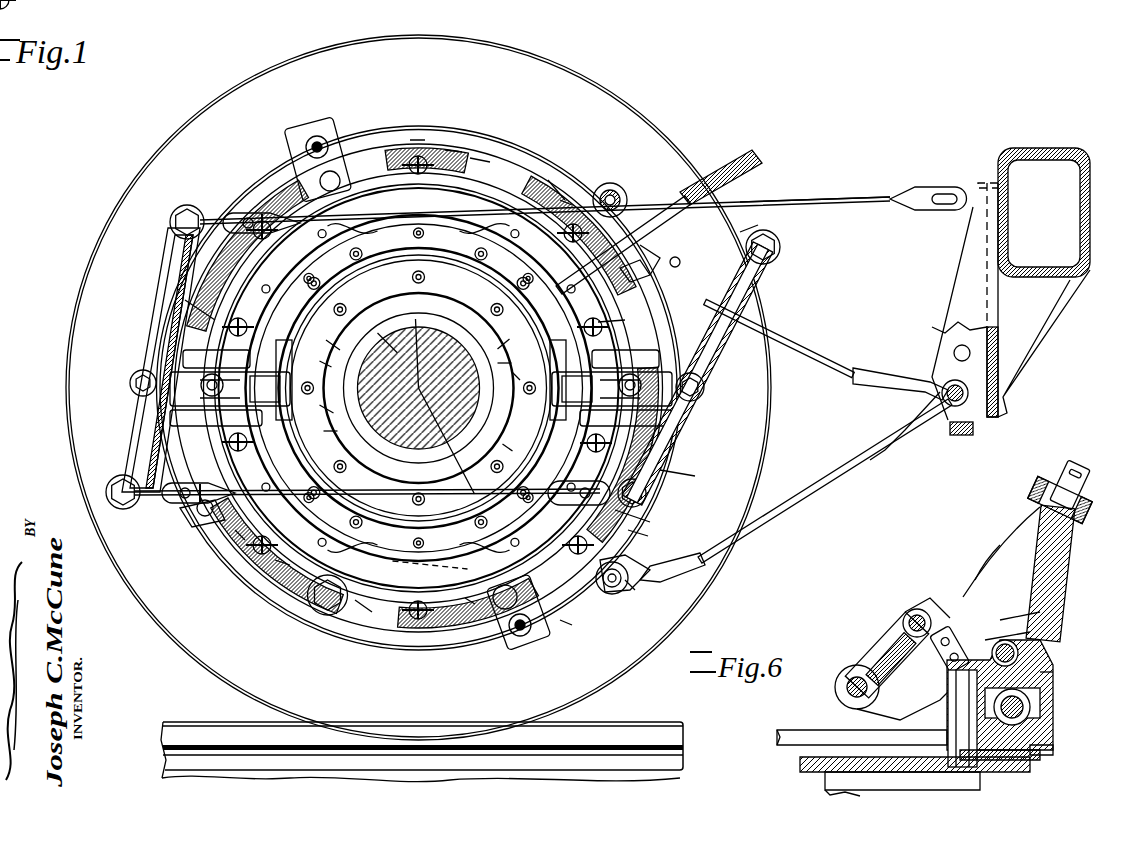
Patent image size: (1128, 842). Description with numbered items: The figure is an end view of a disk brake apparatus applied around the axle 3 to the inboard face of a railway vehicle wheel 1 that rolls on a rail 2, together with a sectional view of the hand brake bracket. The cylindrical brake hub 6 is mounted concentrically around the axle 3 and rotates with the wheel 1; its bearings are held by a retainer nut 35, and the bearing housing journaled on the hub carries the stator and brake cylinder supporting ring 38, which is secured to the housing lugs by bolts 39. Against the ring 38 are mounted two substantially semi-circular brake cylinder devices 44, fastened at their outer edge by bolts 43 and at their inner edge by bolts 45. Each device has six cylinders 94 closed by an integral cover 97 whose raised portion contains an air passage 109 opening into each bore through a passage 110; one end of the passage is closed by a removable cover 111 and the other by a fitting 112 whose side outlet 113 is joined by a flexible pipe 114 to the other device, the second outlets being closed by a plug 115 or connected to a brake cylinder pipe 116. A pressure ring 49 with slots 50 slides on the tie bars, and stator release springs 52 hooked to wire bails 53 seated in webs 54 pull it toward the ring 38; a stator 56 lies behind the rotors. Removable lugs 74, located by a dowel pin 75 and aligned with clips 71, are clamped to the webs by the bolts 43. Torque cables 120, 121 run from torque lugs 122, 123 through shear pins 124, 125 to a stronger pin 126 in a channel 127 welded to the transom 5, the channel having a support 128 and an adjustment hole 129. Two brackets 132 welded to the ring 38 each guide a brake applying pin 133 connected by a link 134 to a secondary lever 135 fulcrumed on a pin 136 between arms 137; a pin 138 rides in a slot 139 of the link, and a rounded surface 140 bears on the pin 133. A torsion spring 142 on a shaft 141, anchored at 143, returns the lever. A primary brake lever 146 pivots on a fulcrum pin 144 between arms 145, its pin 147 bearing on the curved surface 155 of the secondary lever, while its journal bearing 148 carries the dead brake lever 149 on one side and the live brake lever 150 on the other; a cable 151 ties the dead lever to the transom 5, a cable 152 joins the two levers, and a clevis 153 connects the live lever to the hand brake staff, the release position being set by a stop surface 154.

In FIG. 1, the wheel 1 is at (122, 182).
In FIG. 1, the rail 2 is at (437, 105).
In FIG. 1, the axle 3 is at (419, 393).
In FIG. 1, the transom 5 is at (1058, 150).
In FIG. 1, the brake hub 6 is at (507, 370).
In FIG. 1, the retainer nut 35 is at (418, 322).
In FIG. 1, the stator and brake cylinder supporting ring 38 is at (520, 175).
In FIG. 6, the stator and brake cylinder supporting ring 38 is at (790, 730).
In FIG. 1, the bolts 39 is at (427, 276).
In FIG. 1, the bolt 43 is at (535, 168).
In FIG. 1, the brake cylinder devices 44 is at (376, 127).
In FIG. 1, the bolts 45 is at (365, 272).
In FIG. 6, the pressure ring 49 is at (800, 766).
In FIG. 1, the slots 50 is at (418, 140).
In FIG. 1, the stator release spring 52 is at (422, 152).
In FIG. 1, the wire bail 53 is at (455, 150).
In FIG. 1, the webs 54 is at (482, 160).
In FIG. 6, the stator 56 is at (812, 786).
In FIG. 1, the clips 71 is at (300, 135).
In FIG. 1, the lugs 74 is at (316, 136).
In FIG. 1, the dowel pin 75 is at (340, 160).
In FIG. 1, the cylinders 94 is at (420, 228).
In FIG. 1, the cover 97 is at (407, 150).
In FIG. 1, the air passage 109 is at (505, 347).
In FIG. 1, the passage 110 is at (470, 568).
In FIG. 1, the removable cover 111 is at (218, 222).
In FIG. 1, the removable fitting 112 is at (640, 215).
In FIG. 1, the side outlet 113 is at (660, 252).
In FIG. 1, the flexible pipe 114 is at (695, 476).
In FIG. 1, the plug 115 is at (648, 536).
In FIG. 1, the brake cylinder pipe 116 is at (730, 163).
In FIG. 1, the torque cable 120 is at (826, 362).
In FIG. 1, the torque cable 121 is at (836, 500).
In FIG. 1, the torque lug 122 is at (560, 190).
In FIG. 1, the torque lug 123 is at (605, 600).
In FIG. 1, the shear pin 124 is at (625, 188).
In FIG. 1, the shear pin 125 is at (618, 598).
In FIG. 1, the pin 126 is at (975, 418).
In FIG. 1, the channel 127 is at (955, 275).
In FIG. 1, the support 128 is at (962, 437).
In FIG. 1, the hole 129 is at (952, 350).
In FIG. 1, the brackets 132 is at (178, 352).
In FIG. 6, the brackets 132 is at (1070, 737).
In FIG. 6, the brake applying pin 133 is at (1040, 760).
In FIG. 1, the link 134 is at (172, 374).
In FIG. 6, the link 134 is at (1032, 640).
In FIG. 1, the secondary lever 135 is at (334, 366).
In FIG. 6, the secondary lever 135 is at (860, 665).
In FIG. 1, the pin 136 is at (338, 430).
In FIG. 6, the pin 136 is at (845, 687).
In FIG. 1, the arms 137 is at (340, 350).
In FIG. 6, the arms 137 is at (870, 727).
In FIG. 6, the pin 138 is at (915, 610).
In FIG. 6, the slot 139 is at (958, 620).
In FIG. 6, the rounded surface 140 is at (1045, 613).
In FIG. 6, the shaft 141 is at (1032, 708).
In FIG. 1, the torsion spring 142 is at (240, 352).
In FIG. 6, the torsion spring 142 is at (1042, 693).
In FIG. 6, the anchor 143 is at (1053, 748).
In FIG. 1, the fulcrum pin 144 is at (200, 320).
In FIG. 6, the fulcrum pin 144 is at (1020, 655).
In FIG. 1, the arms 145 is at (170, 336).
In FIG. 1, the primary brake lever 146 is at (172, 402).
In FIG. 6, the primary brake lever 146 is at (1064, 558).
In FIG. 1, the pin 147 is at (334, 412).
In FIG. 6, the pin 147 is at (903, 622).
In FIG. 1, the journal bearing 148 is at (130, 383).
In FIG. 6, the journal bearing 148 is at (1070, 468).
In FIG. 1, the dead brake lever 149 is at (165, 255).
In FIG. 1, the live brake lever 150 is at (765, 278).
In FIG. 6, the live brake lever 150 is at (1030, 498).
In FIG. 1, the cable 151 is at (822, 198).
In FIG. 1, the cable 152 is at (362, 612).
In FIG. 1, the clevis 153 is at (752, 230).
In FIG. 6, the stop surface 154 is at (1055, 672).
In FIG. 6, the curved surface 155 is at (895, 650).